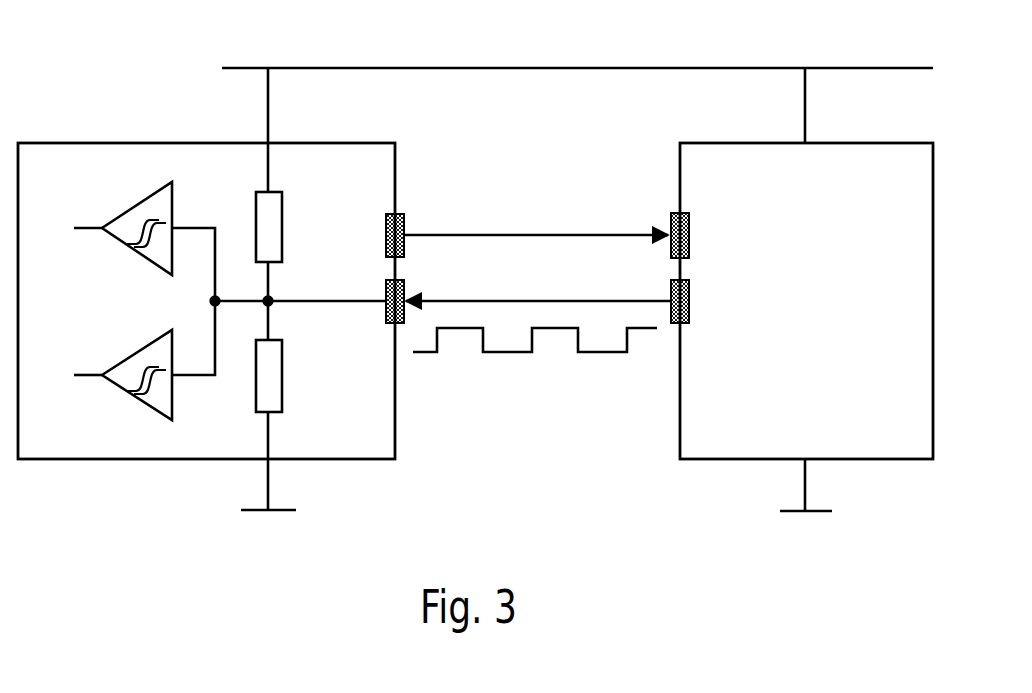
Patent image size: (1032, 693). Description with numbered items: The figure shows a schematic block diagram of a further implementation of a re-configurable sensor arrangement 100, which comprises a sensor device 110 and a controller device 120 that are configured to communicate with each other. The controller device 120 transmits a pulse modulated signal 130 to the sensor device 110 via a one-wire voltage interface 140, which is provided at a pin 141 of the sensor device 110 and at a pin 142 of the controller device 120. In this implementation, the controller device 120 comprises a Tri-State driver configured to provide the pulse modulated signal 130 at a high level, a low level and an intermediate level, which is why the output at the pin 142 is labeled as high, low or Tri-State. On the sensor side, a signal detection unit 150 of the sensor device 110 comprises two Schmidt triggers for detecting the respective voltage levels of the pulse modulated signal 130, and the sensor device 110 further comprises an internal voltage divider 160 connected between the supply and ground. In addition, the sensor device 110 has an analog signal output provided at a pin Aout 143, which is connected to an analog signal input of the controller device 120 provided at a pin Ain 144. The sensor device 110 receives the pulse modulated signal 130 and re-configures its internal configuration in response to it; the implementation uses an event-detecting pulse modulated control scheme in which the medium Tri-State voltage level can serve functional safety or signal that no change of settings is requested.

The sensor arrangement 100 is at (176, 29).
The sensor device 110 is at (115, 461).
The controller device 120 is at (900, 461).
The pulse modulated signal 130 is at (520, 355).
The one-wire voltage interface 140 is at (544, 300).
The pin 141 is at (395, 324).
The pin 142 is at (683, 326).
The pin Aout 143 is at (406, 220).
The pin Ain 144 is at (667, 222).
The signal detection unit 150 is at (116, 243).
The internal voltage divider 160 is at (289, 220).